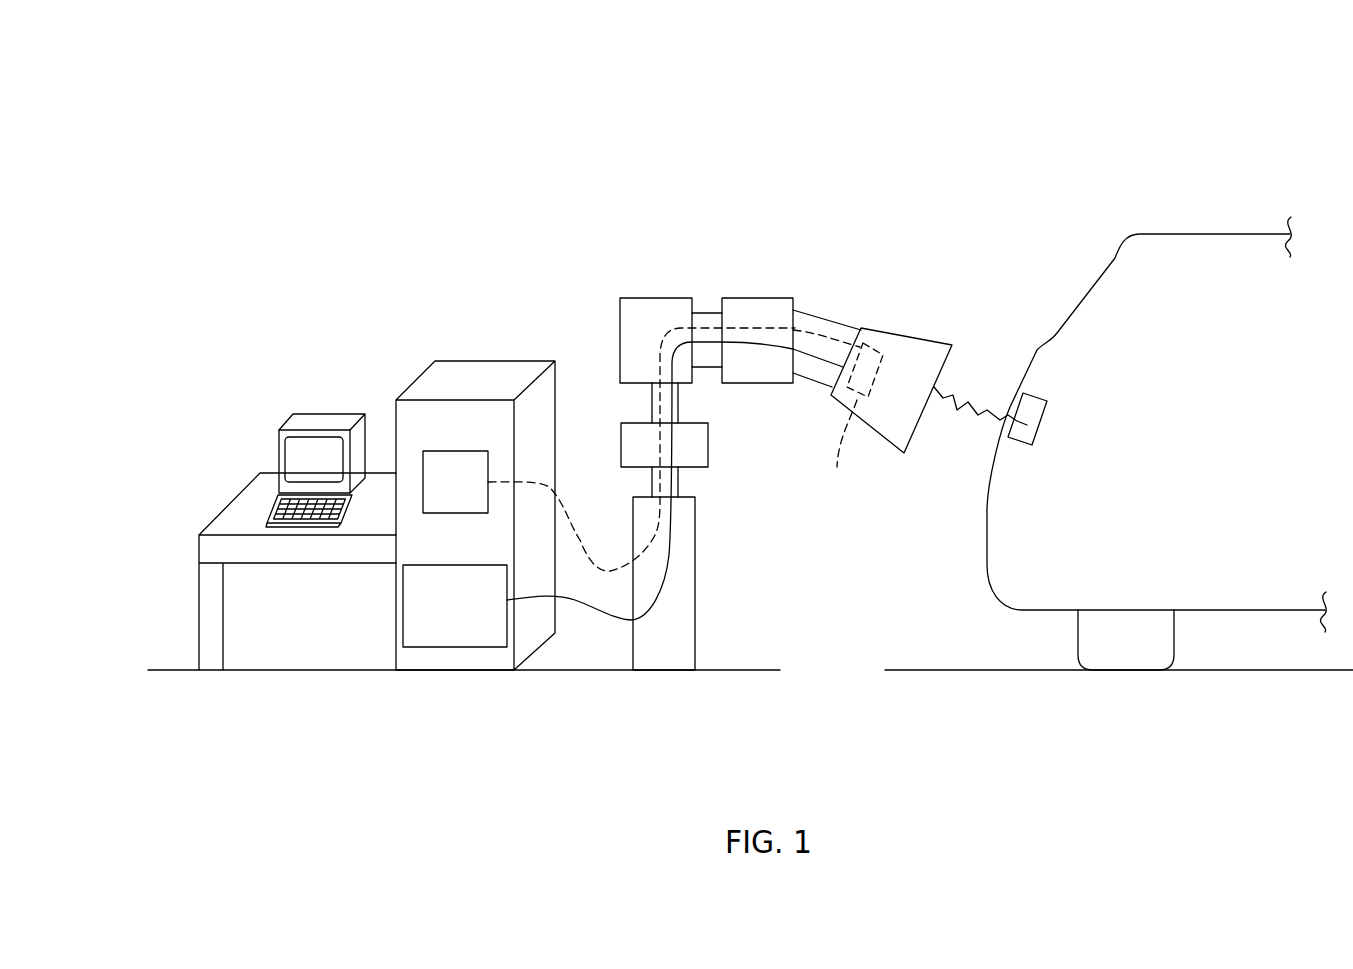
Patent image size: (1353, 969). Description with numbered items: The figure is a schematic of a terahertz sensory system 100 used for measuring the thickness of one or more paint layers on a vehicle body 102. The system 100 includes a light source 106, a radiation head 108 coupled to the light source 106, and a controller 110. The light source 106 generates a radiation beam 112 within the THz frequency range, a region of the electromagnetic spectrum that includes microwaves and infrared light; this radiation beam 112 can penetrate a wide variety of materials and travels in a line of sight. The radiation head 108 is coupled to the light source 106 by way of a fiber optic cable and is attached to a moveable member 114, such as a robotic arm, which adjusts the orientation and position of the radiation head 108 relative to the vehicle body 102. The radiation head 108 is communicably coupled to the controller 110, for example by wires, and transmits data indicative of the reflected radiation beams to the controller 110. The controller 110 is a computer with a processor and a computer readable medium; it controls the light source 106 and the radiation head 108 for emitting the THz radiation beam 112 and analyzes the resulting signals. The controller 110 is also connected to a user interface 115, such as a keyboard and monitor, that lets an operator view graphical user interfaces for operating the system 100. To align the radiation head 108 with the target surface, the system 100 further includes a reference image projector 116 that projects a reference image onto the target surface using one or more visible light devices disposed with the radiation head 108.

The terahertz sensory system 100 is at (388, 322).
The vehicle body 102 is at (1170, 234).
The light source 106 is at (458, 647).
The radiation head 108 is at (883, 338).
The controller 110 is at (458, 450).
The radiation beam 112 is at (965, 404).
The moveable member 114 is at (750, 297).
The user interface 115 is at (277, 498).
The reference image projector 116 is at (850, 418).